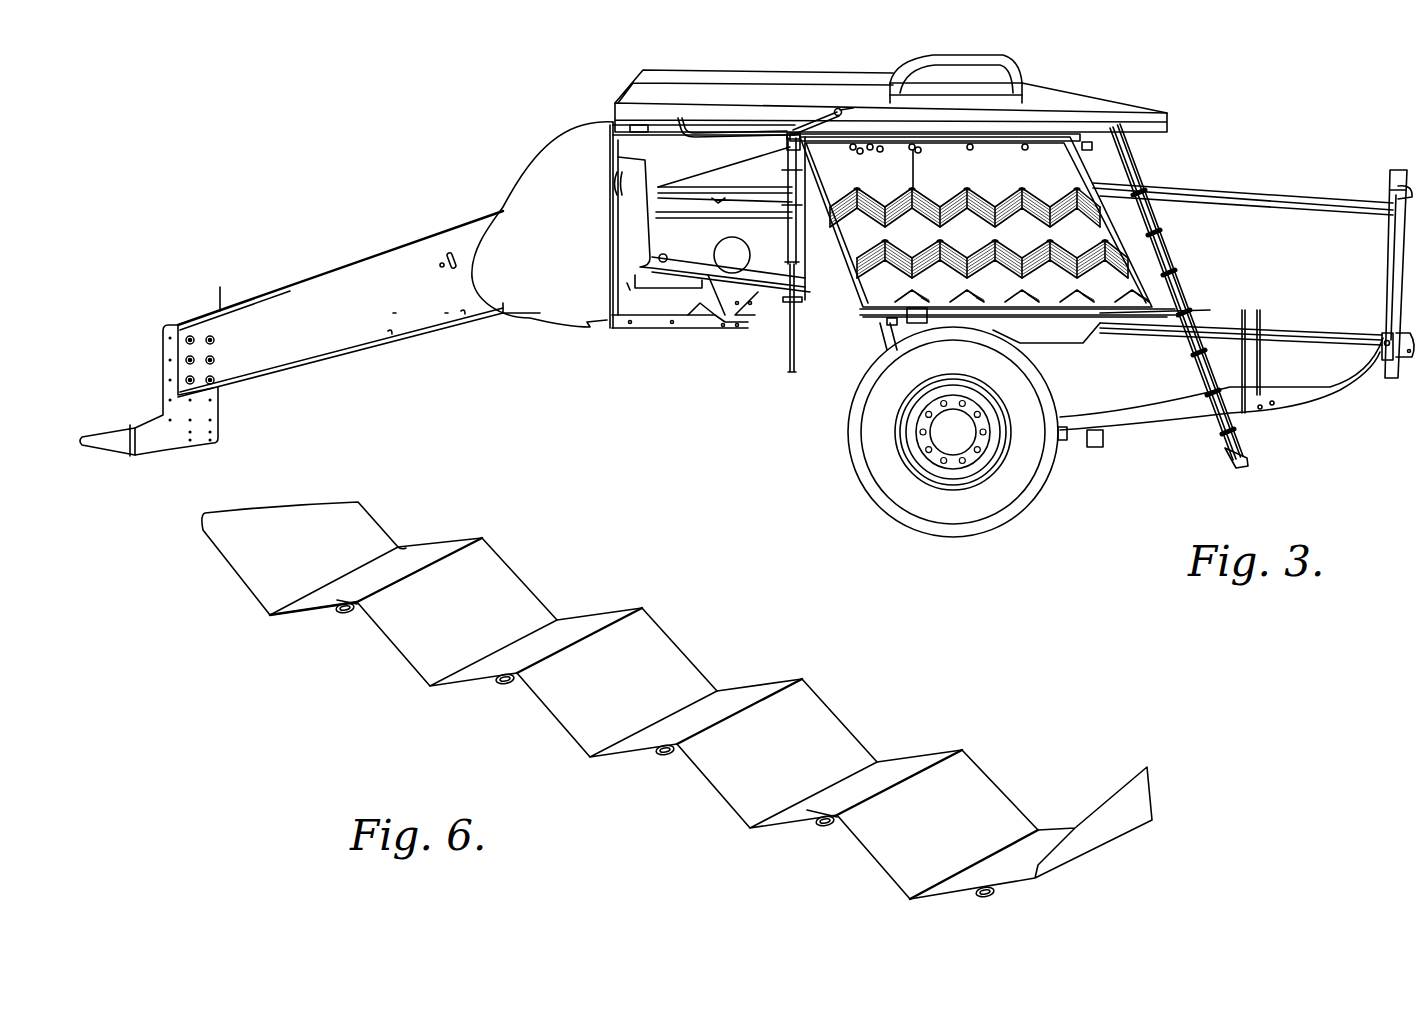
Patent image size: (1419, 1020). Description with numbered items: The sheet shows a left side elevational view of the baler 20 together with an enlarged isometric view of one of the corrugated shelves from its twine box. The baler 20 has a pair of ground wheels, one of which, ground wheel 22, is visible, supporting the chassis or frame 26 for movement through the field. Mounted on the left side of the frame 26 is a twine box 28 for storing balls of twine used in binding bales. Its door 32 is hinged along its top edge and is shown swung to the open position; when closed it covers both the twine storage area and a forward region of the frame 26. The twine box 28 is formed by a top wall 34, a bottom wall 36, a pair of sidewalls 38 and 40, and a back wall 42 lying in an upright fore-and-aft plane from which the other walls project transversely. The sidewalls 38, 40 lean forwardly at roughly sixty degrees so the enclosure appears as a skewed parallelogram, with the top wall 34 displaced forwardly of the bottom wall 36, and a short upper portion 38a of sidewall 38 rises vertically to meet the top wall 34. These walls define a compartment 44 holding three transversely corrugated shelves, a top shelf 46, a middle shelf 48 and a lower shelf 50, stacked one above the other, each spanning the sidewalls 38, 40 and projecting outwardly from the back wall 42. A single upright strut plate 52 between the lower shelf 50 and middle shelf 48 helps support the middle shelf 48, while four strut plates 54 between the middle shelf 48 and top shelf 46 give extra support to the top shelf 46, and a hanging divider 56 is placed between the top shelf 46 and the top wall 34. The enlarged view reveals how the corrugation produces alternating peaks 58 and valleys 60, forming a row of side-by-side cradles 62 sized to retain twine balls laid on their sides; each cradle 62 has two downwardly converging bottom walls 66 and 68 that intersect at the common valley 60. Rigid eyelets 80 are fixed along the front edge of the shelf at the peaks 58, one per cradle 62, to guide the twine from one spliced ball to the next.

In FIG. 3, the baler 20 is at (1185, 120).
In FIG. 3, the ground wheel 22 is at (1017, 485).
In FIG. 3, the frame 26 is at (683, 323).
In FIG. 3, the twine box 28 is at (858, 323).
In FIG. 3, the door 32 is at (1112, 120).
In FIG. 3, the top wall 34 is at (1015, 135).
In FIG. 3, the bottom wall 36 is at (1083, 317).
In FIG. 3, the sidewall 38 is at (862, 283).
In FIG. 3, the upper portion of sidewall 38a is at (800, 160).
In FIG. 3, the sidewall 40 is at (1133, 257).
In FIG. 3, the back wall 42 is at (1063, 163).
In FIG. 3, the compartment 44 is at (1120, 213).
In FIG. 3, the top shelf 46 is at (935, 195).
In FIG. 6, the top shelf 46 is at (292, 498).
In FIG. 3, the middle shelf 48 is at (868, 245).
In FIG. 3, the lower shelf 50 is at (968, 292).
In FIG. 3, the strut plate 52 is at (968, 283).
In FIG. 3, the strut plates 54 is at (1052, 230).
In FIG. 3, the hanging divider 56 is at (915, 172).
In FIG. 6, the peak 58 is at (407, 580).
In FIG. 6, the valley 60 is at (342, 578).
In FIG. 3, the cradle 62 is at (887, 187).
In FIG. 6, the cradle 62 is at (404, 542).
In FIG. 6, the bottom wall 66 is at (240, 558).
In FIG. 6, the bottom wall 68 is at (337, 598).
In FIG. 6, the eyelet 80 is at (342, 617).